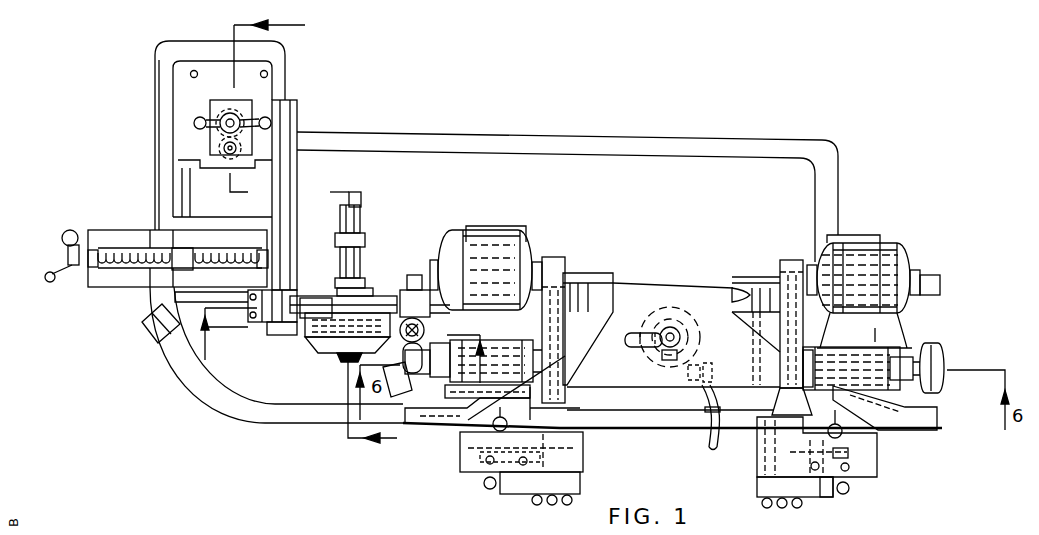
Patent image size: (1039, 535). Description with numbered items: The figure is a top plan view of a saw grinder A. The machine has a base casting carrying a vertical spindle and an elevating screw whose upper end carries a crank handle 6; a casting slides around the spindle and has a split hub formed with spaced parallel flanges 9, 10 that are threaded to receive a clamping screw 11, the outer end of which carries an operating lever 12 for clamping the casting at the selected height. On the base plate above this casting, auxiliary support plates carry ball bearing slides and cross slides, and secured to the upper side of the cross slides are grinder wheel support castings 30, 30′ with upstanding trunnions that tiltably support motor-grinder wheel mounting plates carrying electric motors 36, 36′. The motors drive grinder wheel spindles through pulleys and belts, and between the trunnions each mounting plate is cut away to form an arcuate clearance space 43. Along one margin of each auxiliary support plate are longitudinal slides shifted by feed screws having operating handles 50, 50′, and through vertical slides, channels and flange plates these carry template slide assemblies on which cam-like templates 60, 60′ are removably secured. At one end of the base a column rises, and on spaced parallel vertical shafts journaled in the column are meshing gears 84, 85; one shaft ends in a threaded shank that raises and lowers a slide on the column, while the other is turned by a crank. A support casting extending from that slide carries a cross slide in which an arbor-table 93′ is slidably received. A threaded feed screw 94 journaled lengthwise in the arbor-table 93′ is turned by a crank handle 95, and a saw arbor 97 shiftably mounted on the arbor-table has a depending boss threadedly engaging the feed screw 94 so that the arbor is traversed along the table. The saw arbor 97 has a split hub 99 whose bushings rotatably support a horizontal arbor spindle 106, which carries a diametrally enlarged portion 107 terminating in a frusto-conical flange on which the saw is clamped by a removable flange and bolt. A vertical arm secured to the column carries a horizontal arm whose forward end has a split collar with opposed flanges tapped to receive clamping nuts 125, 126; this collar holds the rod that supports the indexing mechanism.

The saw grinder A is at (842, 115).
The crank handle 6 is at (628, 340).
The flange 9 is at (350, 345).
The flange 10 is at (295, 233).
The clamping screw 11 is at (692, 372).
The operating lever 12 is at (705, 437).
The grinder wheel support casting 30 is at (905, 428).
The grinder wheel support casting 30′ is at (457, 425).
The electric motor 36 is at (893, 246).
The electric motor 36′ is at (468, 230).
The arcuate clearance space 43 is at (915, 330).
The operating handle 50 is at (846, 494).
The operating handle 50′ is at (490, 491).
The cam-like template 60 is at (880, 465).
The cam-like template 60′ is at (472, 472).
The meshing gear 84 is at (228, 158).
The meshing gear 85 is at (240, 110).
The arbor-table 93′ is at (147, 287).
The threaded feed screw 94 is at (135, 258).
The crank handle 95 is at (56, 282).
The saw arbor 97 is at (362, 280).
The split hub 99 is at (362, 227).
The arbor spindle 106 is at (358, 205).
The diametrally enlarged portion 107 is at (370, 285).
The clamping nut 125 is at (250, 296).
The clamping nut 126 is at (258, 322).